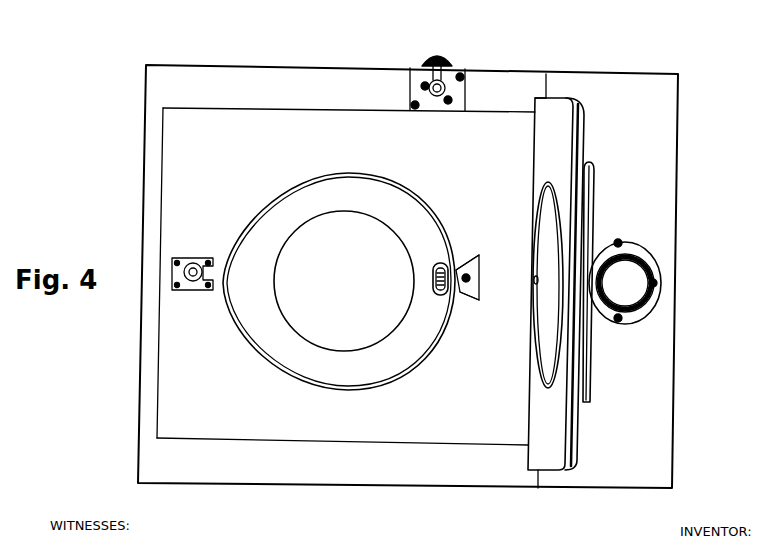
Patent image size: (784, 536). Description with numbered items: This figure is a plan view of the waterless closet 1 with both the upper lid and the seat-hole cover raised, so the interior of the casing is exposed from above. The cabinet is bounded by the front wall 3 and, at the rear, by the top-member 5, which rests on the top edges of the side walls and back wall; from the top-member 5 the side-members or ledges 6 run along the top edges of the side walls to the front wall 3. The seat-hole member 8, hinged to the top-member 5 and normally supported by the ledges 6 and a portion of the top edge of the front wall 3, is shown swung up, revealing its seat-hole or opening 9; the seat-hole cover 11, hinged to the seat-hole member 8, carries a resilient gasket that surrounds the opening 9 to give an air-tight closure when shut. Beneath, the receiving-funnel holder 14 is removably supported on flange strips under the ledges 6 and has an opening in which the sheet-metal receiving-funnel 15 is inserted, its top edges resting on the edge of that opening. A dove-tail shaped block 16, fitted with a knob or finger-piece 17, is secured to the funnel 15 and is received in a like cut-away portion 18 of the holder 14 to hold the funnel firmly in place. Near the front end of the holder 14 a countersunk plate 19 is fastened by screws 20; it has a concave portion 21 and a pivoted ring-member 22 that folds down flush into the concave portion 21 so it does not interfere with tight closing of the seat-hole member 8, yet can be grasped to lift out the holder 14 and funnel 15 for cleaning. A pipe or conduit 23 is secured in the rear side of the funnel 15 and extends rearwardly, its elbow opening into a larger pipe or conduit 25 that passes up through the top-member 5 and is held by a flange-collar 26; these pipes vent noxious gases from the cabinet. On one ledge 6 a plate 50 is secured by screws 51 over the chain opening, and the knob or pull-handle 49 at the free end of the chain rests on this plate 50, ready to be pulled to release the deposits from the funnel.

The waterless closet 1 is at (408, 255).
The front wall 3 is at (145, 363).
The top-member 5 is at (672, 207).
The side-members or ledges 6 is at (298, 76).
The seat-hole member 8 is at (560, 140).
The seat-hole or opening 9 is at (558, 350).
The seat-hole cover 11 is at (593, 185).
The receiving-funnel holder 14 is at (357, 273).
The receiving-funnel 15 is at (386, 175).
The dove-tail shaped block 16 is at (490, 258).
The knob or finger-piece 17 is at (471, 280).
The cut-away portion 18 is at (474, 258).
The countersunk plate 19 is at (183, 257).
The screws 20 is at (118, 304).
The concave portion 21 is at (193, 264).
The ring-member 22 is at (192, 282).
The pipe or conduit 23 is at (433, 286).
The pipe or conduit 25 is at (628, 258).
The flange-collar 26 is at (618, 243).
The knob or pull-handle 49 is at (447, 64).
The plate 50 is at (426, 76).
The screws 51 is at (452, 100).